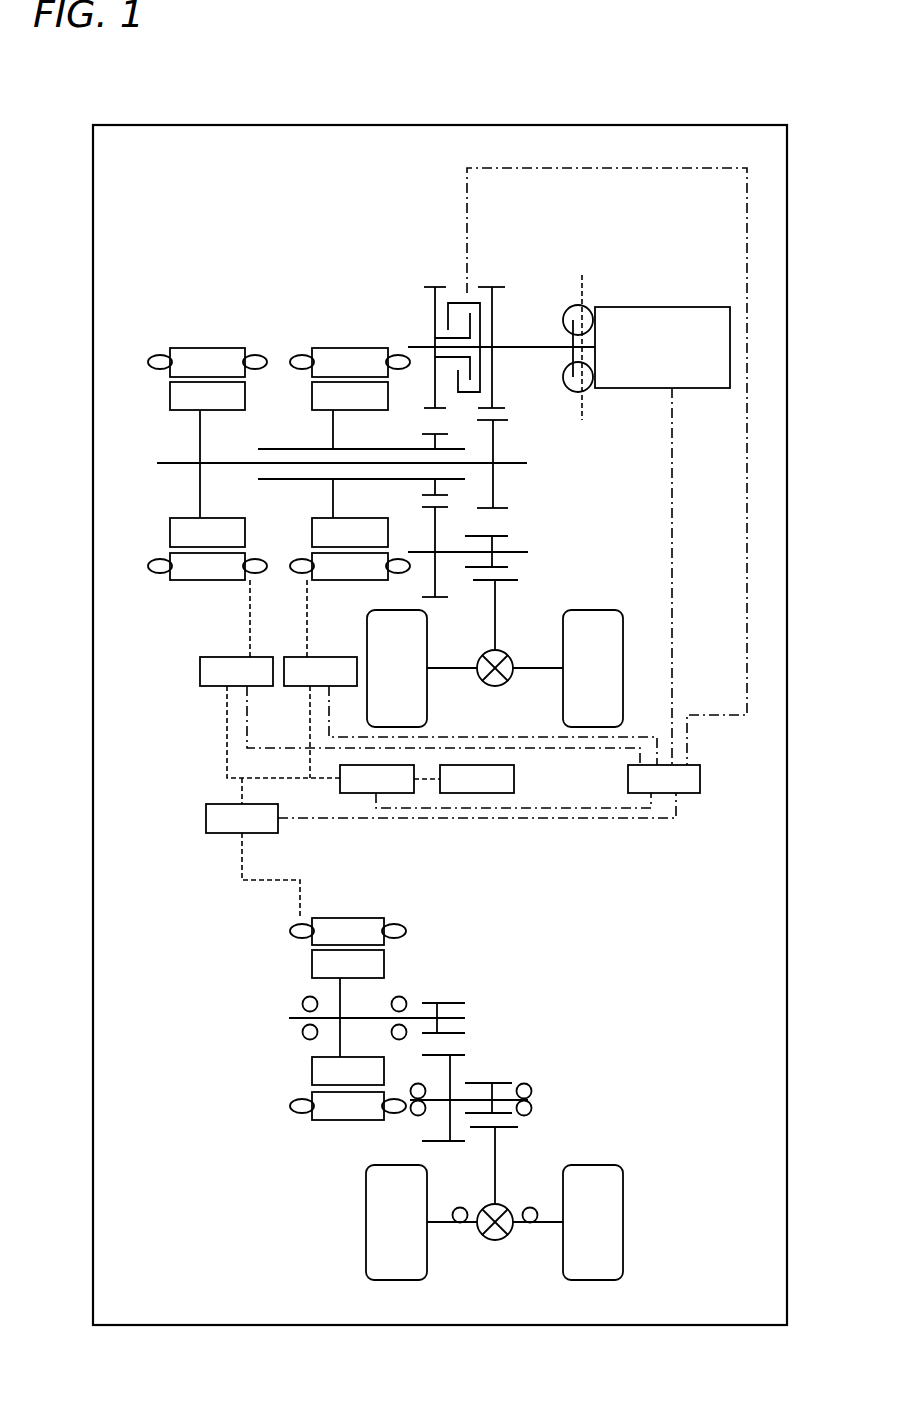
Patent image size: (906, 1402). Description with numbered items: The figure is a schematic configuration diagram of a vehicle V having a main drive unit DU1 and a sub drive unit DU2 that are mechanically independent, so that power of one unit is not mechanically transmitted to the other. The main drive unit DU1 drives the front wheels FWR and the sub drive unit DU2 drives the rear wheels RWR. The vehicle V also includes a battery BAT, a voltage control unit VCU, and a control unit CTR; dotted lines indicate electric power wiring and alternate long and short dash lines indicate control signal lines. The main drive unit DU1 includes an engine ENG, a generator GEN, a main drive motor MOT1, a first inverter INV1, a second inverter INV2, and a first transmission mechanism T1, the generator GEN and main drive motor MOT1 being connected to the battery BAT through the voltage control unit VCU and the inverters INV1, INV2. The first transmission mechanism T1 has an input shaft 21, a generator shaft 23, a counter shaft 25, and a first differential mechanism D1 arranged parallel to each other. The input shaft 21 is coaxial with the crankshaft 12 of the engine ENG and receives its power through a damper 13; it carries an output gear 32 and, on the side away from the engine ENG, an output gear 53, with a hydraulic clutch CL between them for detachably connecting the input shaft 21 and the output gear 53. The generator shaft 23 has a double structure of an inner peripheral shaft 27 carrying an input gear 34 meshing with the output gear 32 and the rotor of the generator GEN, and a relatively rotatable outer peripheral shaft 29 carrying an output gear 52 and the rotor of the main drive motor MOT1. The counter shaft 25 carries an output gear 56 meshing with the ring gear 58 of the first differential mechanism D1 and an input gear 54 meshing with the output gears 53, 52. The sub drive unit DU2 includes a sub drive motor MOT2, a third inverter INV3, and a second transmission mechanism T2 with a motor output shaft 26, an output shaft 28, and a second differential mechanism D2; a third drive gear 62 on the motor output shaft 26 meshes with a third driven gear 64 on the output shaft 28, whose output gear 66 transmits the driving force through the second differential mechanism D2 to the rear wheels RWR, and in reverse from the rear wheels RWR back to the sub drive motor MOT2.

The vehicle V is at (706, 116).
The main drive unit DU1 is at (414, 198).
The sub drive unit DU2 is at (445, 929).
The generator GEN is at (199, 344).
The main drive motor MOT1 is at (338, 344).
The sub drive motor MOT2 is at (339, 913).
The engine ENG is at (662, 536).
The crankshaft 12 is at (590, 345).
The damper 13 is at (574, 305).
The input shaft 21 is at (532, 346).
The generator shaft 23 is at (160, 470).
The counter shaft 25 is at (520, 551).
The motor output shaft 26 is at (457, 1017).
The inner peripheral shaft 27 is at (477, 467).
The output shaft 28 is at (512, 1103).
The outer peripheral shaft 29 is at (357, 448).
The output gear 32 is at (481, 283).
The input gear 34 is at (503, 422).
The output gear 52 is at (445, 433).
The output gear 53 is at (430, 284).
The input gear 54 is at (433, 597).
The output gear 56 is at (500, 536).
The ring gear 58 is at (510, 580).
The third drive gear 62 is at (443, 1002).
The third driven gear 64 is at (444, 1143).
The output gear 66 is at (500, 1083).
The hydraulic clutch CL is at (455, 298).
The first transmission mechanism T1 is at (503, 284).
The second transmission mechanism T2 is at (452, 994).
The first differential mechanism D1 is at (506, 650).
The second differential mechanism D2 is at (492, 1244).
The front wheels FWR is at (495, 668).
The rear wheels RWR is at (494, 1222).
The first inverter INV1 is at (420, 679).
The second inverter INV2 is at (470, 679).
The third inverter INV3 is at (441, 848).
The voltage control unit VCU is at (495, 786).
The battery BAT is at (477, 779).
The control unit CTR is at (664, 779).